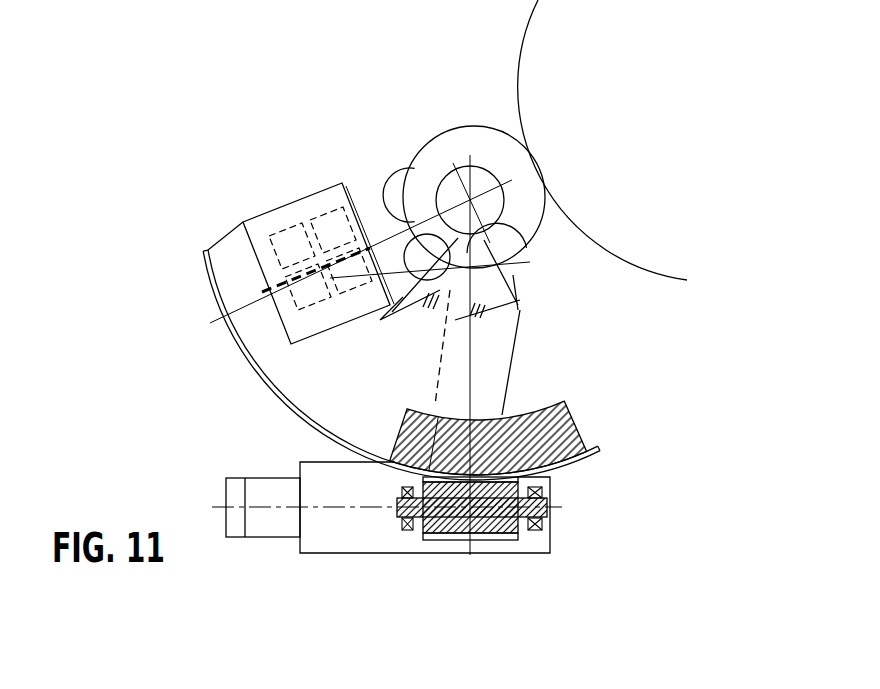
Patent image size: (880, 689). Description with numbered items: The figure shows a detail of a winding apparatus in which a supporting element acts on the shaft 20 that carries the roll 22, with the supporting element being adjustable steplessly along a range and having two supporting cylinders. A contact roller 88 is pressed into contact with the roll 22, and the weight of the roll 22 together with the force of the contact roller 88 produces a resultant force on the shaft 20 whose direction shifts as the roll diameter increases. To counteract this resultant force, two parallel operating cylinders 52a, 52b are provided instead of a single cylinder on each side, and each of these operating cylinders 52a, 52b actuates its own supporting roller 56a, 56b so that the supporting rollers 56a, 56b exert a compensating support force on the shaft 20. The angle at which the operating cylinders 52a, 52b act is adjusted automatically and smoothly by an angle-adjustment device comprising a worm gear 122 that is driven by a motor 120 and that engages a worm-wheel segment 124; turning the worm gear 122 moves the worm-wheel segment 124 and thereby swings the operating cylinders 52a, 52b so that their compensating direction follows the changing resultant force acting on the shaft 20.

The shaft 20 is at (463, 172).
The roll 22 is at (492, 126).
The supporting roller 56a is at (392, 165).
The supporting roller 56b is at (350, 178).
The operating cylinder 52a is at (279, 240).
The operating cylinder 52b is at (350, 327).
The contact roller 88 is at (663, 277).
The motor 120 is at (273, 540).
The worm gear 122 is at (498, 538).
The worm-wheel segment 124 is at (582, 438).